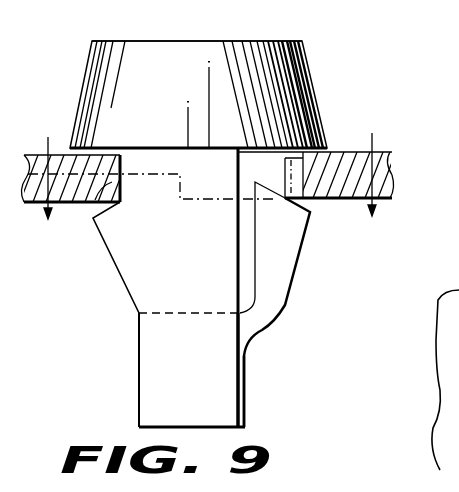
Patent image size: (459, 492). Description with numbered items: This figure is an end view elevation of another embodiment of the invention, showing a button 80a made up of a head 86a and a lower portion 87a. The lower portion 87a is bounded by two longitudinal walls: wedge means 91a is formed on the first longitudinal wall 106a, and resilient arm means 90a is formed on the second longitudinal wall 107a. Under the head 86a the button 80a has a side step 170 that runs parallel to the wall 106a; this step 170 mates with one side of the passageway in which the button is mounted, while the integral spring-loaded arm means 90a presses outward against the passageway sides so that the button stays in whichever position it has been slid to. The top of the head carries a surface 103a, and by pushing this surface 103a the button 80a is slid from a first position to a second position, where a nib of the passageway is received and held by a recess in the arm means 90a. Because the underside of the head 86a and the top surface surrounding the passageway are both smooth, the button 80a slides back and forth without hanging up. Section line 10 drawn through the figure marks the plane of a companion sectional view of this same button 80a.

The button 80a is at (182, 52).
The surface 103a is at (220, 42).
The head 86a is at (308, 68).
The section line 10 is at (211, 166).
The side step 170 is at (88, 203).
The wedge means 91a is at (114, 238).
The resilient arm means 90a is at (288, 245).
The lower portion 87a is at (150, 342).
The first longitudinal wall 106a is at (138, 402).
The second longitudinal wall 107a is at (233, 400).